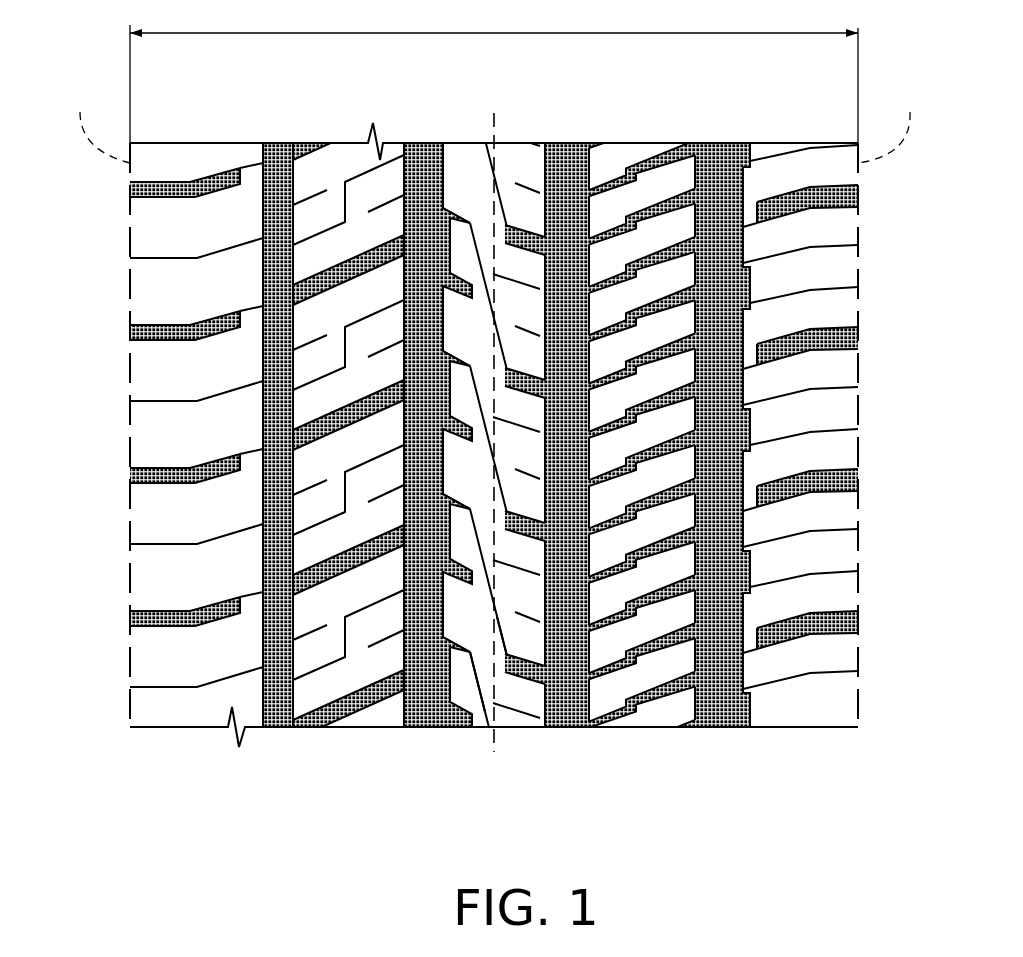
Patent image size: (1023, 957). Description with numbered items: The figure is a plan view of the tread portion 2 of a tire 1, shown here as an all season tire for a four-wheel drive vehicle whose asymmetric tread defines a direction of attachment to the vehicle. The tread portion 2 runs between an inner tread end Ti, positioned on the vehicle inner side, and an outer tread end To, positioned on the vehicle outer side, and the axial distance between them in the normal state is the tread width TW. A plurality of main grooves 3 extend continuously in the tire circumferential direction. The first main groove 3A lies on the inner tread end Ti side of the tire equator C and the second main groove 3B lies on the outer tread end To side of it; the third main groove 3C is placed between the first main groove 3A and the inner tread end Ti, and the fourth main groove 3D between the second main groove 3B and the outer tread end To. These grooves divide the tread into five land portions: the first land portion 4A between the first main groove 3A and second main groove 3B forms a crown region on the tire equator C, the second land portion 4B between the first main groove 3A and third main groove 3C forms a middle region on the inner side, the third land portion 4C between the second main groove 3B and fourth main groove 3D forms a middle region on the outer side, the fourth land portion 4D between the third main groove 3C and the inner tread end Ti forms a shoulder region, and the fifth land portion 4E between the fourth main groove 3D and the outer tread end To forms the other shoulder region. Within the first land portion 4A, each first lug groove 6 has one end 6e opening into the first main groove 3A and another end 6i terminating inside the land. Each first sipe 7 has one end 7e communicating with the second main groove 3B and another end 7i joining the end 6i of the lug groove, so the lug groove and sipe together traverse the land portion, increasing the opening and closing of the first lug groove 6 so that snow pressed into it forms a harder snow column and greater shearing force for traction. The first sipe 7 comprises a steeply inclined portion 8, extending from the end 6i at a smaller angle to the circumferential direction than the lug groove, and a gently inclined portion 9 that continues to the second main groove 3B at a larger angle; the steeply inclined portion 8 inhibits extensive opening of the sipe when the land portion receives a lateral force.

The tire 1 is at (952, 68).
The tread portion 2 is at (750, 100).
The main grooves 3 is at (504, 398).
The first main groove 3A is at (563, 180).
The second main groove 3B is at (423, 167).
The third main groove 3C is at (720, 163).
The fourth main groove 3D is at (276, 163).
The first land portion 4A is at (465, 177).
The second land portion 4B is at (647, 183).
The third land portion 4C is at (345, 163).
The fourth land portion 4D is at (807, 170).
The fifth land portion 4E is at (192, 163).
The first lug groove 6 is at (503, 642).
The another end of first lug groove 6i is at (507, 638).
The one end of first lug groove 6e is at (473, 710).
The first sipe 7 is at (385, 790).
The one end of first sipe 7e is at (445, 505).
The another end of first sipe 7i is at (560, 640).
The steeply inclined portion 8 is at (505, 648).
The gently inclined portion 9 is at (450, 502).
The tire equator C is at (495, 419).
The tread width TW is at (494, 72).
The outer tread end To is at (97, 123).
The inner tread end Ti is at (888, 123).